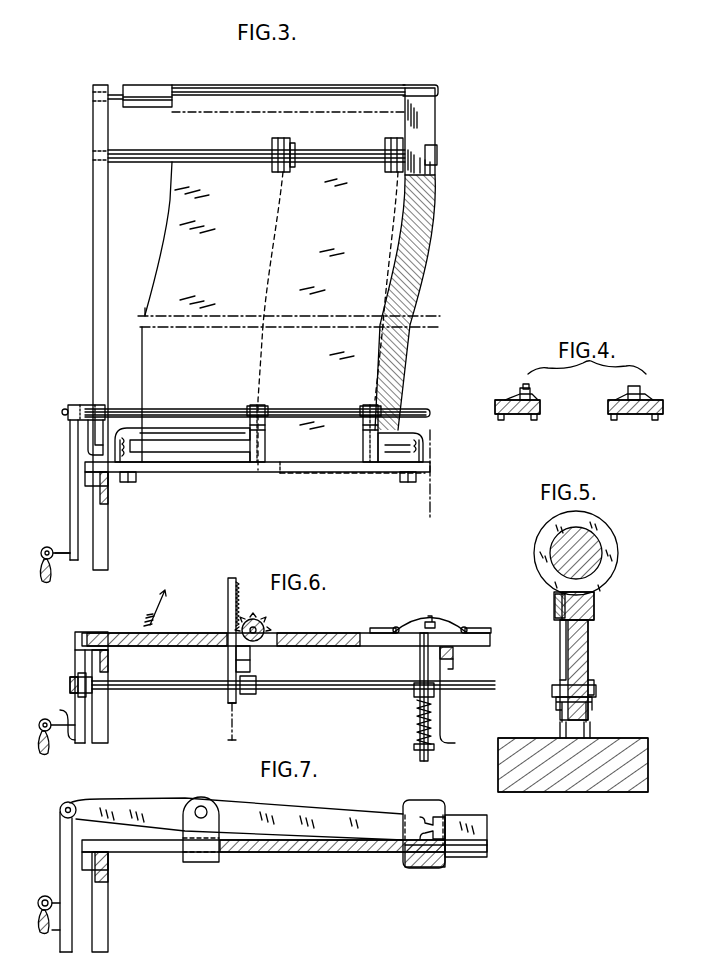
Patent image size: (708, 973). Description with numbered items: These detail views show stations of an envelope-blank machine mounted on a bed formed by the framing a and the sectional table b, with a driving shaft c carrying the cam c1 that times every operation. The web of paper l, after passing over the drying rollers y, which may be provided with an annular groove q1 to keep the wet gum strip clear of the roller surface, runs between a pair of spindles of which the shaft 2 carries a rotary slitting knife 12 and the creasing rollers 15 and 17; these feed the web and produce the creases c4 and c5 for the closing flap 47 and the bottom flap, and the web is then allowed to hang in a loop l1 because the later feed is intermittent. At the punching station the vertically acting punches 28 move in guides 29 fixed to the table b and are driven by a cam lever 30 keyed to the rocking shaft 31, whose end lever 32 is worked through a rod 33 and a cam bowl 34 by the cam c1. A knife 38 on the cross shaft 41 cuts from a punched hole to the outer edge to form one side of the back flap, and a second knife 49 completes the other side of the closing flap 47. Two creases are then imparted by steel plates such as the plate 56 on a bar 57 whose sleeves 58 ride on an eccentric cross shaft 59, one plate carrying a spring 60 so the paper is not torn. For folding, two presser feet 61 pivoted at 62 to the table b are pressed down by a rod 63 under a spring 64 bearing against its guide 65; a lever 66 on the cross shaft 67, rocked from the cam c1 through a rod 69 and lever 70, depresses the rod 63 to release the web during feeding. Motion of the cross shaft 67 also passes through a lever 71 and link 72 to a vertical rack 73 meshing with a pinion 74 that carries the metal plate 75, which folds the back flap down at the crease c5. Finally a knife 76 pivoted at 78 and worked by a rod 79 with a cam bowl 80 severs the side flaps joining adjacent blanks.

In FIG. 3, the shaft or roller 2 is at (256, 148).
In FIG. 3, the rotary slitting knife 12 is at (439, 151).
In FIG. 3, the creasing roller 15 is at (280, 138).
In FIG. 3, the creasing roller 17 is at (396, 138).
In FIG. 3, the punch 28 is at (260, 485).
In FIG. 3, the guide 29 is at (182, 446).
In FIG. 3, the cam lever 30 is at (266, 406).
In FIG. 3, the cross shaft or rocking shaft 31 is at (205, 409).
In FIG. 3, the lever 32 is at (78, 405).
In FIG. 3, the rod 33 is at (70, 492).
In FIG. 3, the cam roller or bowl 34 is at (46, 545).
In FIG. 4, the knife 38 is at (512, 398).
In FIG. 4, the cross shaft 41 is at (533, 395).
In FIG. 3, the closing or gummed flap 47 is at (418, 254).
In FIG. 4, the knife 49 is at (641, 400).
In FIG. 5, the steel plate 56 is at (560, 736).
In FIG. 5, the bar 57 is at (590, 650).
In FIG. 5, the strap or sleeve 58 is at (605, 528).
In FIG. 5, the eccentric cross shaft 59 is at (600, 560).
In FIG. 5, the spring 60 is at (556, 607).
In FIG. 6, the presser foot 61 is at (384, 628).
In FIG. 6, the pivot 62 is at (448, 622).
In FIG. 6, the rod 63 is at (420, 660).
In FIG. 6, the spring 64 is at (415, 733).
In FIG. 6, the guide 65 is at (455, 743).
In FIG. 6, the lever 66 is at (416, 700).
In FIG. 6, the cross shaft 67 is at (316, 690).
In FIG. 6, the rod 69 is at (70, 688).
In FIG. 6, the lever 70 is at (80, 700).
In FIG. 6, the lever 71 is at (248, 695).
In FIG. 6, the link 72 is at (251, 660).
In FIG. 6, the rack 73 is at (235, 605).
In FIG. 6, the quadrant or pinion 74 is at (253, 618).
In FIG. 6, the metal plate 75 is at (310, 633).
In FIG. 7, the knife 76 is at (293, 810).
In FIG. 7, the pivot 78 is at (202, 806).
In FIG. 7, the rod 79 is at (60, 832).
In FIG. 7, the cam bowl 80 is at (45, 898).
In FIG. 3, the standards or framing a is at (108, 535).
In FIG. 6, the standards or framing a is at (108, 715).
In FIG. 7, the standards or framing a is at (108, 918).
In FIG. 4, the table b is at (607, 418).
In FIG. 3, the driving shaft c is at (44, 581).
In FIG. 6, the driving shaft c is at (43, 754).
In FIG. 7, the driving shaft c is at (42, 941).
In FIG. 3, the cam c1 is at (41, 553).
In FIG. 6, the cam c1 is at (39, 725).
In FIG. 7, the cam c1 is at (38, 930).
In FIG. 3, the crease c4 is at (384, 266).
In FIG. 3, the crease c5 is at (272, 270).
In FIG. 3, the web of paper l is at (142, 365).
In FIG. 3, the loop l1 is at (249, 295).
In FIG. 3, the annular groove q1 is at (425, 108).
In FIG. 3, the drying rollers y is at (142, 107).